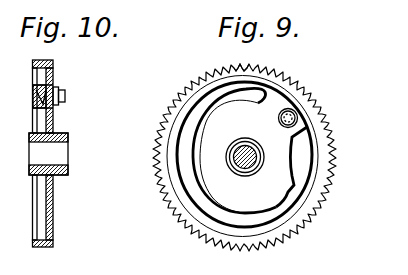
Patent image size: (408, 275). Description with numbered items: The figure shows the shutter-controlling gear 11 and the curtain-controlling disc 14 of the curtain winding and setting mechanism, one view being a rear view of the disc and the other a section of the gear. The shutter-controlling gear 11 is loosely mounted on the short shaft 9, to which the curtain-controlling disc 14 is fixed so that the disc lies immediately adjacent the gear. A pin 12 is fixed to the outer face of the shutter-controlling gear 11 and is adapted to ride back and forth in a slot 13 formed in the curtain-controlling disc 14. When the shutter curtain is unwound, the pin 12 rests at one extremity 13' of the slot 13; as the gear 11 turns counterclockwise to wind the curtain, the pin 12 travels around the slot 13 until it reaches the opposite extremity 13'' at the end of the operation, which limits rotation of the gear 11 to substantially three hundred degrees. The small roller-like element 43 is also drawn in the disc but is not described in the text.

In FIG. 9, the gear wheel 9 is at (233, 172).
In FIG. 10, the pin 11 is at (53, 73).
In FIG. 10, the pin head 12 is at (66, 98).
In FIG. 9, the cam rim 13 is at (231, 150).
In FIG. 9, the spiral cam groove 13' is at (234, 150).
In FIG. 9, the pawl stop 13'' is at (279, 167).
In FIG. 9, the gear teeth 14 is at (227, 67).
In FIG. 9, the roller 43 is at (318, 104).